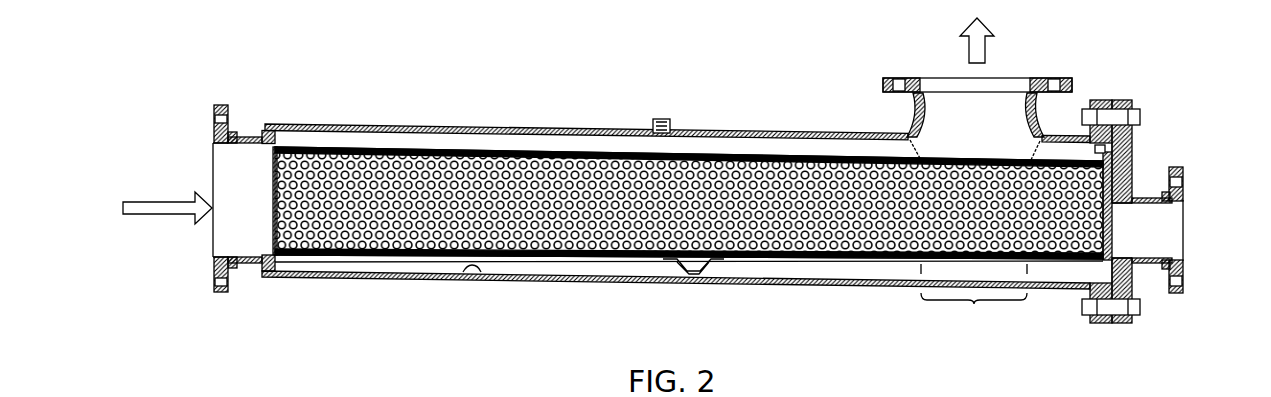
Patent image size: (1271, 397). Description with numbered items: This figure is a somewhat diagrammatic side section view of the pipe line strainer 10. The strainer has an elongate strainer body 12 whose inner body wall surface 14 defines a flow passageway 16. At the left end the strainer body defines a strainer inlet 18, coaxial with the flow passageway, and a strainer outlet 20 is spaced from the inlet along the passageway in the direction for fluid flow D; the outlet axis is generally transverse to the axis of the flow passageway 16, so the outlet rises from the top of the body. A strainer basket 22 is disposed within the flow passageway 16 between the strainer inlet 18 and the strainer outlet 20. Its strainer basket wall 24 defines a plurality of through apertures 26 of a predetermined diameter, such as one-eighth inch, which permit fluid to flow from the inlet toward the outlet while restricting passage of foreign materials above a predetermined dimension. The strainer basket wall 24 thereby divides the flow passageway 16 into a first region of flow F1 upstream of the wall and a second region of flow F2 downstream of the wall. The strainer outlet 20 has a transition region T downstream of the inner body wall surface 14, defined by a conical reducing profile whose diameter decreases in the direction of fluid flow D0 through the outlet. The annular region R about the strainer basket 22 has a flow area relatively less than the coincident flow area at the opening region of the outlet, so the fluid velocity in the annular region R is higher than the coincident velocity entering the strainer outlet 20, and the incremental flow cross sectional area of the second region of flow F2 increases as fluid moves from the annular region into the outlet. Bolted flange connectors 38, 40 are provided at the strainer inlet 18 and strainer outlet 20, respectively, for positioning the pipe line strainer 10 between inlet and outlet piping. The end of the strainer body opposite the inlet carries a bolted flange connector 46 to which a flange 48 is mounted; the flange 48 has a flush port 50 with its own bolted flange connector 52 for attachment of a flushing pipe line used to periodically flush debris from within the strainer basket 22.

The pipe line strainer 10 is at (364, 328).
The strainer body 12 is at (393, 278).
The inner body wall surface 14 is at (478, 273).
The flow passageway 16 is at (512, 138).
The strainer inlet 18 is at (206, 243).
The strainer outlet 20 is at (1026, 70).
The strainer basket 22 is at (768, 268).
The strainer basket wall 24 is at (1058, 260).
The through apertures 26 is at (570, 259).
The bolted flange connector 38 is at (225, 103).
The bolted flange connector 40 is at (1075, 86).
The bolted flange connector 46 is at (1100, 324).
The flange 48 is at (1124, 324).
The flush port 50 is at (1203, 232).
The bolted flange connector 52 is at (1176, 292).
The direction for fluid flow D is at (152, 214).
The direction of fluid flow through the strainer outlet D0 is at (969, 38).
The first region of flow F1 is at (695, 143).
The second region of flow F2 is at (390, 150).
The transition region T is at (985, 133).
The annular region R is at (974, 299).